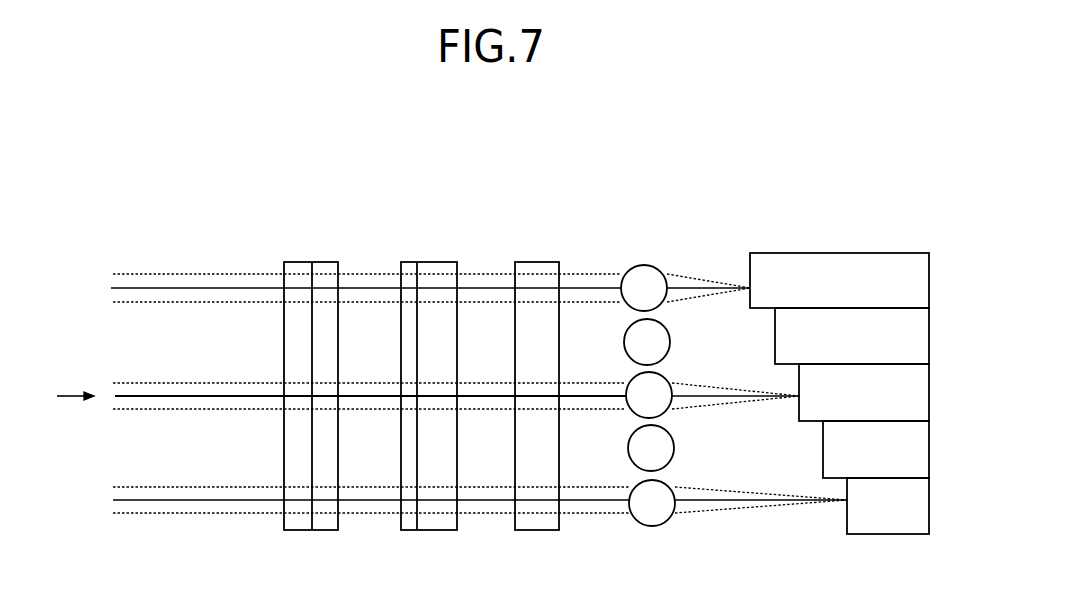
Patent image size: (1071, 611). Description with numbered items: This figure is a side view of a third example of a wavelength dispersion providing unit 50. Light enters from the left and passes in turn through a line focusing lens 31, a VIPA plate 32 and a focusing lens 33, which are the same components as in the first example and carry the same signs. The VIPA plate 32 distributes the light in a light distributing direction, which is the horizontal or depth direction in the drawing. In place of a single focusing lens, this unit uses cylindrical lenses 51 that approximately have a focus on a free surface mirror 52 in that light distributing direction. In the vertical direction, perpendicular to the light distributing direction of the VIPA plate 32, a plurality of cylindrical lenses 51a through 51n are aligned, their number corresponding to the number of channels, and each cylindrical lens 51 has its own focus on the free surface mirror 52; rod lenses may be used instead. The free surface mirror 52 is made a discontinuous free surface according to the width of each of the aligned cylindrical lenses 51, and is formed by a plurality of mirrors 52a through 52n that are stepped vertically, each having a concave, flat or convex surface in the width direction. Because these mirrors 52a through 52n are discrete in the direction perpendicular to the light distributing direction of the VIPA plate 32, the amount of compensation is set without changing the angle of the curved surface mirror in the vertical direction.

The wavelength dispersion providing unit 50 is at (197, 163).
The line focusing lens 31 is at (312, 262).
The VIPA plate 32 is at (428, 262).
The focusing lens 33 is at (537, 262).
The cylindrical lenses 51 is at (654, 247).
The cylindrical lens 51a is at (661, 270).
The cylindrical lens 51n is at (663, 525).
The free surface mirror 52 is at (869, 233).
The mirror 52a is at (797, 253).
The mirror 52n is at (847, 518).